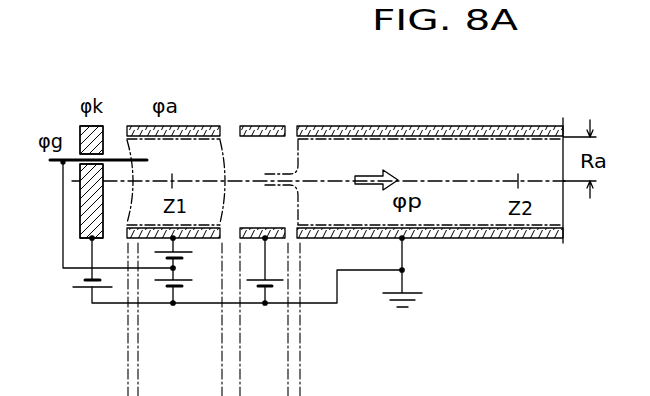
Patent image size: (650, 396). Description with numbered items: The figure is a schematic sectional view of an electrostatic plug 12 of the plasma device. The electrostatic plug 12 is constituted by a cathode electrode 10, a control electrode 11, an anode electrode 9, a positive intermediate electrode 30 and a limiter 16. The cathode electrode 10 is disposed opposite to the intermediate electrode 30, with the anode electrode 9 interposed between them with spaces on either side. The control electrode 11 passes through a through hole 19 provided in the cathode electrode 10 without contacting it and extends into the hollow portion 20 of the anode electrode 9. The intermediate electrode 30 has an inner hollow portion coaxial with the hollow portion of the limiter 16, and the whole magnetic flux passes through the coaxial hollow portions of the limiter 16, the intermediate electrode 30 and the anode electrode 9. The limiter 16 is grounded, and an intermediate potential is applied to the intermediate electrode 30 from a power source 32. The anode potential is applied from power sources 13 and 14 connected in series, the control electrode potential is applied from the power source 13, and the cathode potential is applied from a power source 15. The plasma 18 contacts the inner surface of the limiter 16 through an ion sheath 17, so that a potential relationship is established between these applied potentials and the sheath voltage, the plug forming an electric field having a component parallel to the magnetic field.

The anode electrode 9 is at (196, 126).
The cathode electrode 10 is at (80, 127).
The control electrode 11 is at (121, 158).
The electrostatic plug 12 is at (110, 348).
The power source 13 is at (165, 287).
The power source 14 is at (188, 256).
The power source 15 is at (72, 287).
The limiter 16 is at (437, 126).
The ion sheath 17 is at (497, 140).
The plasma 18 is at (471, 214).
The through hole 19 is at (63, 163).
The hollow portion 20 is at (210, 160).
The positive intermediate electrode 30 is at (260, 126).
The power source 32 is at (280, 287).